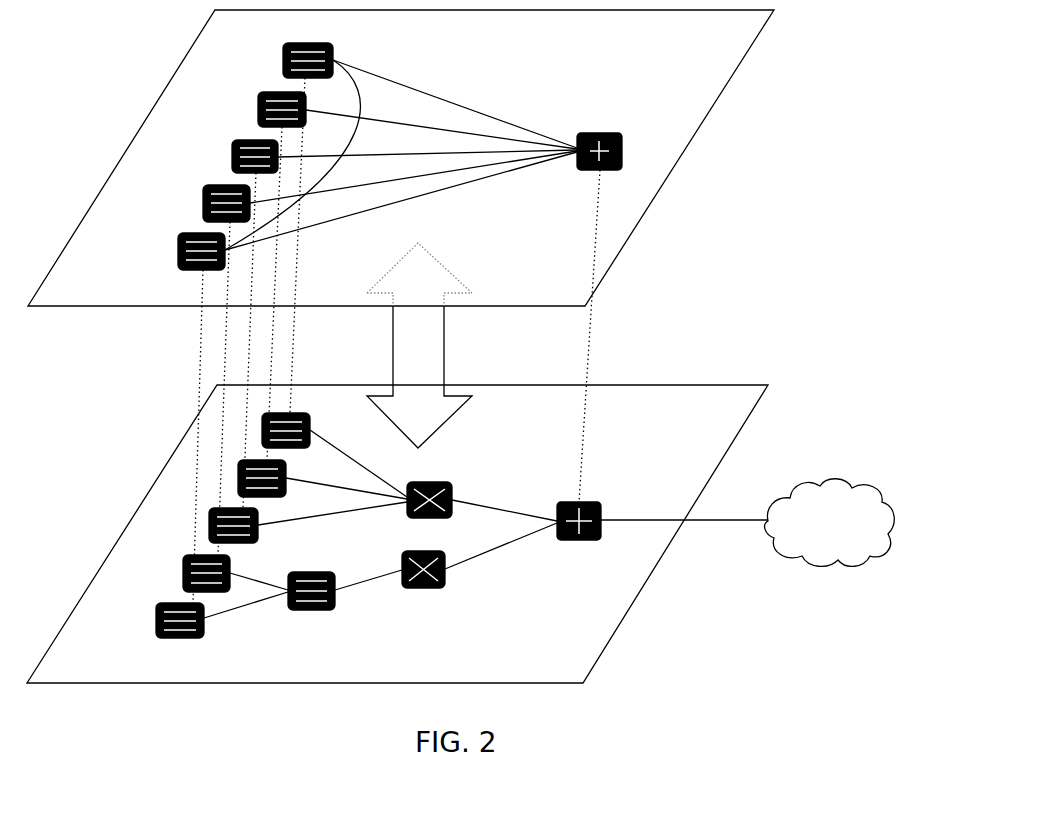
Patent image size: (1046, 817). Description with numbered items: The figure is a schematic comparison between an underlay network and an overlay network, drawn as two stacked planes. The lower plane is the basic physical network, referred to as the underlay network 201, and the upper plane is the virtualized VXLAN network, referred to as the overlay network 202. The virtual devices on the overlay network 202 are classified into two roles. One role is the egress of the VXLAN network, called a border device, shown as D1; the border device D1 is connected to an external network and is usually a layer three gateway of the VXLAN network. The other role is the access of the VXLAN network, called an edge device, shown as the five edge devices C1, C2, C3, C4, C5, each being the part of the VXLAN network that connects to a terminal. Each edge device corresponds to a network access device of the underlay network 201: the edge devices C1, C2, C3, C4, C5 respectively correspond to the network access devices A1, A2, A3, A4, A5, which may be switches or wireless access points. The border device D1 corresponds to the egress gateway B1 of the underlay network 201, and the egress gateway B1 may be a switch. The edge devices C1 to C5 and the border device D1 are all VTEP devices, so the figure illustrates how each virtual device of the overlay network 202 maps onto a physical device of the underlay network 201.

The underlay network 201 is at (682, 385).
The overlay network 202 is at (703, 117).
The edge device C1 is at (281, 58).
The edge device C2 is at (253, 108).
The edge device C3 is at (225, 153).
The edge device C4 is at (199, 200).
The edge device C5 is at (171, 250).
The border device D1 is at (599, 130).
The network access device A1 is at (267, 429).
The network access device A2 is at (238, 476).
The network access device A3 is at (209, 523).
The network access device A4 is at (180, 570).
The network access device A5 is at (153, 618).
The egress gateway B1 is at (579, 503).